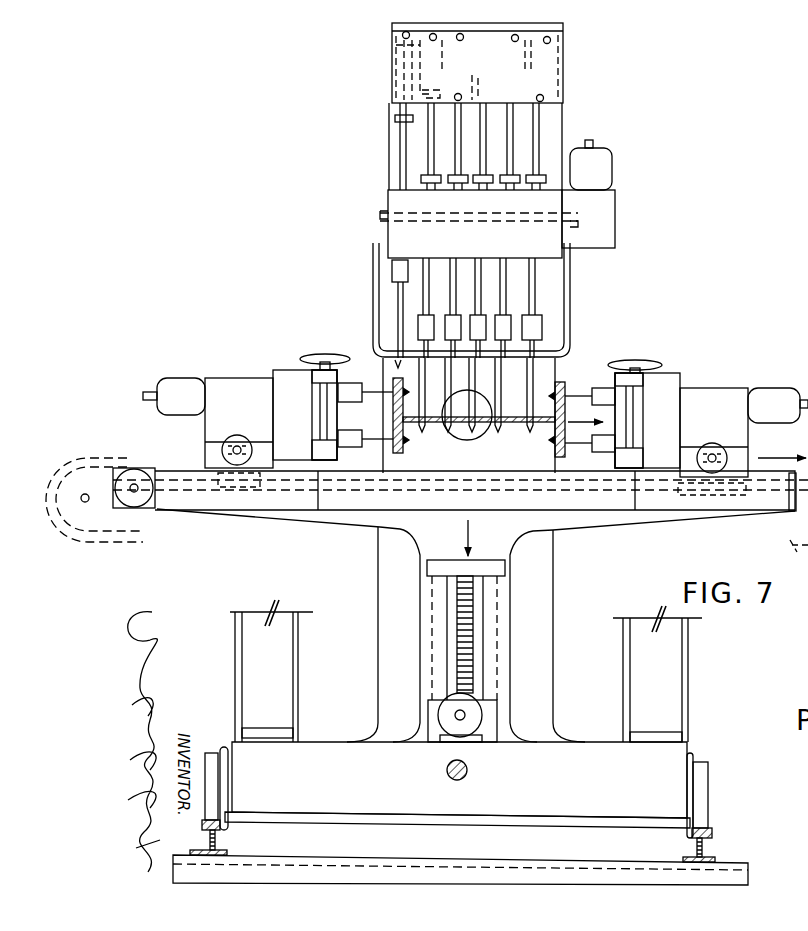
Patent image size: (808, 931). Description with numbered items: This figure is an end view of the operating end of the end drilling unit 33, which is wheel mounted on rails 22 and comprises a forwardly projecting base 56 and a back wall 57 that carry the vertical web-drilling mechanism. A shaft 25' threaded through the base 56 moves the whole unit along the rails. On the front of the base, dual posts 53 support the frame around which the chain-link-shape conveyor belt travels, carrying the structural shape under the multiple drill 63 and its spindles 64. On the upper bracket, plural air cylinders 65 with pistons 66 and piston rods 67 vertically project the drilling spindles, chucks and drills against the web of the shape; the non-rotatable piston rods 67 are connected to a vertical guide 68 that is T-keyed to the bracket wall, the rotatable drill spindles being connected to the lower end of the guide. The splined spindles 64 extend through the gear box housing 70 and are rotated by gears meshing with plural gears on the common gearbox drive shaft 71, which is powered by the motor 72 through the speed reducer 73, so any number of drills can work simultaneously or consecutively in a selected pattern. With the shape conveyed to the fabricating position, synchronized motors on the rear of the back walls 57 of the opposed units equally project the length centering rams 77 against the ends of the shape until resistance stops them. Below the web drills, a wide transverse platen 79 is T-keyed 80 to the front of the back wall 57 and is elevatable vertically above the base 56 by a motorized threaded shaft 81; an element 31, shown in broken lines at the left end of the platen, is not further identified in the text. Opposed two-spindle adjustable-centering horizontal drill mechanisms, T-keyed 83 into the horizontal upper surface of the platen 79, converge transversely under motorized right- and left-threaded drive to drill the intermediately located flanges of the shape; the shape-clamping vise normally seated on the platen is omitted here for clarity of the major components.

The rails 22 is at (712, 840).
The shaft 25' is at (479, 770).
The pivot roller 31 is at (106, 462).
The end drilling unit 33 is at (305, 268).
The dual posts 53 is at (690, 676).
The base 56 is at (546, 809).
The back wall 57 is at (562, 120).
The multiple drill 63 is at (548, 372).
The spindles 64 is at (486, 270).
The air cylinders 65 is at (508, 66).
The pistons 66 is at (398, 46).
The piston rods 67 is at (398, 108).
The vertical guide 68 is at (396, 122).
The valve block 70 is at (470, 251).
The common gearbox drive shaft 71 is at (380, 214).
The motor 72 is at (600, 178).
The speed reducer 73 is at (608, 220).
The length centering rams 77 is at (458, 440).
The transverse platen 79 is at (497, 472).
The T-key 80 is at (440, 648).
The motorized threaded shaft 81 is at (470, 572).
The T-key 83 is at (376, 486).